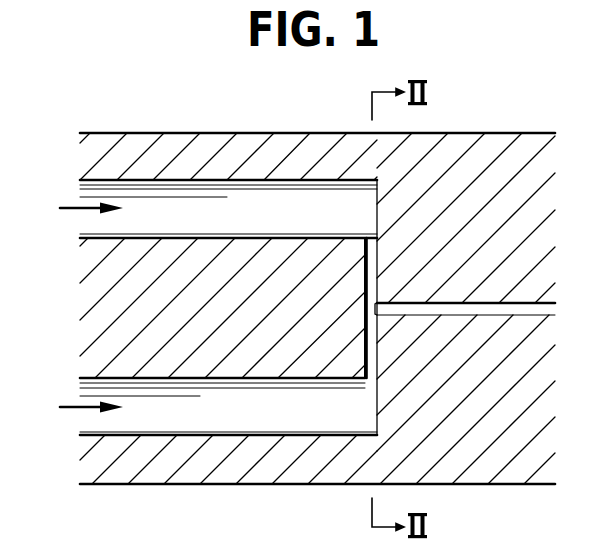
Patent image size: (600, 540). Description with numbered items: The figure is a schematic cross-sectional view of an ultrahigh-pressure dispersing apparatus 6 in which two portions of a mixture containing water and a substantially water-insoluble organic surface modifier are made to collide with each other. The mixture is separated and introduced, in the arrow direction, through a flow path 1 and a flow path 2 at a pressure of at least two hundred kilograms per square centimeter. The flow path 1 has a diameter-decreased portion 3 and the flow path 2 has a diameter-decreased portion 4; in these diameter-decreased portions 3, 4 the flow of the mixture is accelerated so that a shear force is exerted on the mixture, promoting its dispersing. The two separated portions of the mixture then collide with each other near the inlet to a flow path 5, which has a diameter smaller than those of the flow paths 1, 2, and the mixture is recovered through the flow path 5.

The flow path 1 is at (208, 203).
The flow path 2 is at (197, 420).
The diameter-decreased portion 3 is at (365, 279).
The diameter-decreased portion 4 is at (365, 348).
The flow path 5 is at (470, 309).
The ultrahigh-pressure dispersing apparatus 6 is at (323, 131).